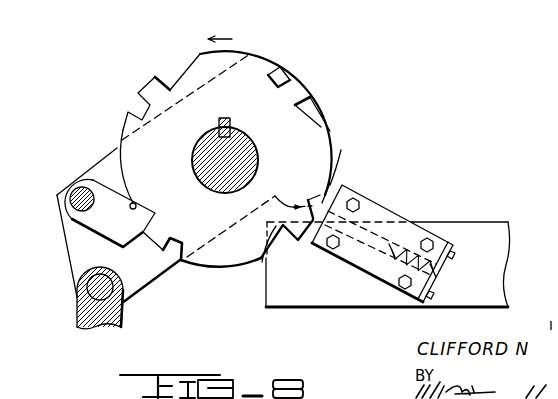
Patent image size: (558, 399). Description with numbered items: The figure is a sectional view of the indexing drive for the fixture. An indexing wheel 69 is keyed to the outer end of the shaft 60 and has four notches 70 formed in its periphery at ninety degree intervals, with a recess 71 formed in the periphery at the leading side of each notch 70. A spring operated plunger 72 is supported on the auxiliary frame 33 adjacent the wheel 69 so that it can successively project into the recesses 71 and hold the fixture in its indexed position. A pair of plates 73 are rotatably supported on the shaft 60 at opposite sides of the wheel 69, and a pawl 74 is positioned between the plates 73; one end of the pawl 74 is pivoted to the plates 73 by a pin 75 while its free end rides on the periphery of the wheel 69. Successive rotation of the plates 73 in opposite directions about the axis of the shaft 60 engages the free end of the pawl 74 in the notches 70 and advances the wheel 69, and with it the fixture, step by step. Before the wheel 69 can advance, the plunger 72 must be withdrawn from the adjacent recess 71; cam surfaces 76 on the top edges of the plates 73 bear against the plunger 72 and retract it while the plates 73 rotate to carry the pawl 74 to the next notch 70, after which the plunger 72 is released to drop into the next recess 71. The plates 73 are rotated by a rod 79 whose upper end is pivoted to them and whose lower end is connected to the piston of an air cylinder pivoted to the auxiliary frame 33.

The auxiliary frame 33 is at (466, 211).
The shaft 60 is at (226, 159).
The indexing wheel 69 is at (233, 54).
The notches 70 is at (172, 83).
The recess 71 is at (129, 106).
The spring operated plunger 72 is at (313, 245).
The plates 73 is at (330, 125).
The pawl 74 is at (93, 218).
The pin 75 is at (70, 203).
The cam surfaces 76 is at (333, 172).
The rod 79 is at (78, 312).